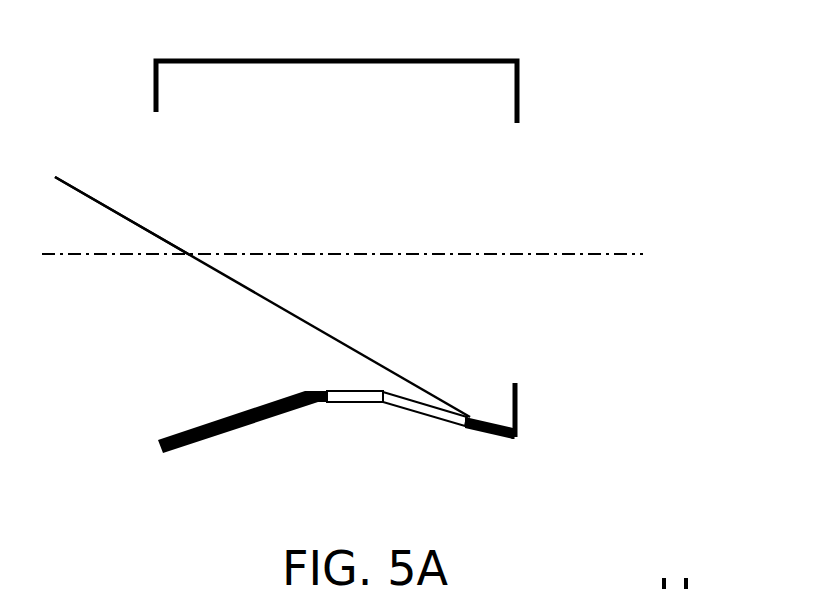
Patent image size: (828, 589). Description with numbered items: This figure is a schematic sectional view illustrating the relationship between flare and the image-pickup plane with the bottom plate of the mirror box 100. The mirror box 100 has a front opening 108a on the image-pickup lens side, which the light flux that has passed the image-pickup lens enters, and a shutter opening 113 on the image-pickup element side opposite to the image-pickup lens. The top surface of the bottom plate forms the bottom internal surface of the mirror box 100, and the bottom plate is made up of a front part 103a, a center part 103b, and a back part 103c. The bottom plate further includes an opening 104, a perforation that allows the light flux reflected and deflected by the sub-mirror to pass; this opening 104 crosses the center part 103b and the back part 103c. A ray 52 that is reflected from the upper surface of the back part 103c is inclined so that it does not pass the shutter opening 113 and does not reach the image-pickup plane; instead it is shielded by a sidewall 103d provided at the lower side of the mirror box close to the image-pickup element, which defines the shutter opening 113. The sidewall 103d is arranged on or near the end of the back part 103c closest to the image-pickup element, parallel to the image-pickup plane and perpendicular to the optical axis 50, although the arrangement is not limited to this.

The mirror box 100 is at (442, 59).
The optical axis 50 is at (603, 253).
The ray 52 is at (514, 402).
The shutter opening 113 is at (515, 383).
The front part 103a is at (198, 440).
The center part 103b is at (312, 402).
The back part 103c is at (480, 435).
The sidewall 103d is at (513, 430).
The opening 104 is at (388, 402).
The front opening 108a is at (158, 355).